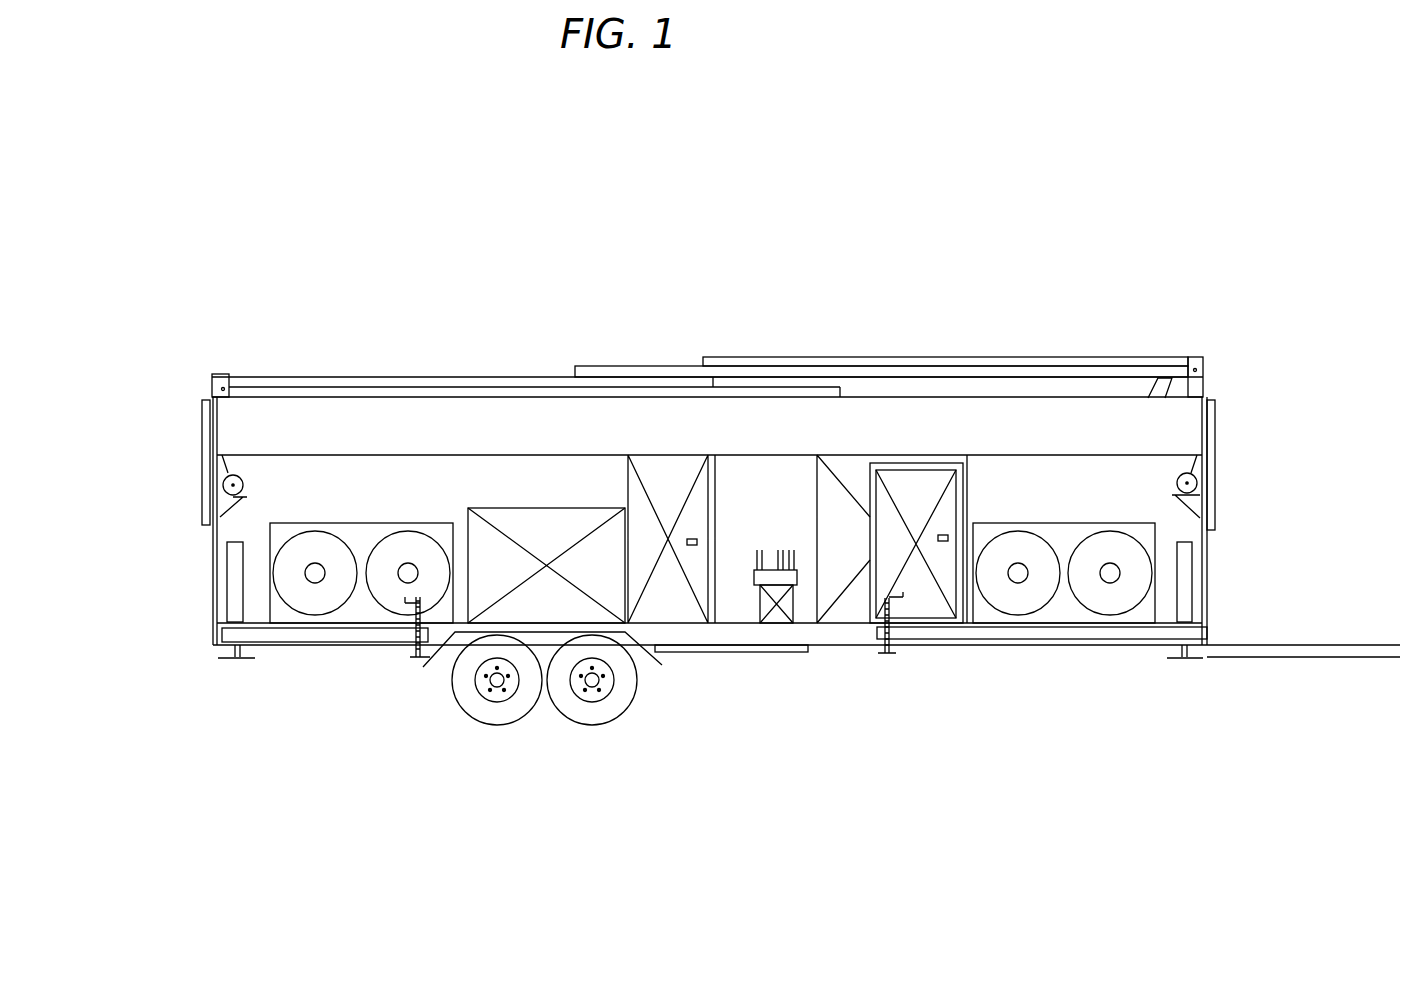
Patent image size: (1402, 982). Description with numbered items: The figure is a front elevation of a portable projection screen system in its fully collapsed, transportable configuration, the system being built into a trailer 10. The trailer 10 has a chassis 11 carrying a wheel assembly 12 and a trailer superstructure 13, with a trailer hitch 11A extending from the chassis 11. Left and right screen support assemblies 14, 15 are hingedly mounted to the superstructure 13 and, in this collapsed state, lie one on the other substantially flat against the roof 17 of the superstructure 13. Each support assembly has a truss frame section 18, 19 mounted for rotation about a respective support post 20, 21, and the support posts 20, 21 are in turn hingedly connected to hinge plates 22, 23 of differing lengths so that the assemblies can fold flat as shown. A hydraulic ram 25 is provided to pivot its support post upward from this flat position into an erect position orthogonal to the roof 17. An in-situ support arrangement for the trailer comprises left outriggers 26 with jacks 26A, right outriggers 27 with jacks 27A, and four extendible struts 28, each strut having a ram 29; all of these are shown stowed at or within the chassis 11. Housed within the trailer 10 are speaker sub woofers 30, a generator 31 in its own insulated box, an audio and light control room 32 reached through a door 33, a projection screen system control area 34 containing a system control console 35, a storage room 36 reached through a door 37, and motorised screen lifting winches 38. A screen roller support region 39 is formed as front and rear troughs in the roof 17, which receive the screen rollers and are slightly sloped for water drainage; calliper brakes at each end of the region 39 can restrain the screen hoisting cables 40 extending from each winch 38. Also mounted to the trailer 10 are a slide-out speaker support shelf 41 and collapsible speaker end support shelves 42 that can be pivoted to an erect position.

The trailer 10 is at (740, 680).
The chassis 11 is at (836, 635).
The trailer hitch 11A is at (1286, 650).
The wheel assembly 12 is at (542, 718).
The trailer superstructure 13 is at (213, 543).
The left screen support assembly 14 is at (383, 387).
The right screen support assembly 15 is at (948, 366).
The roof 17 is at (1015, 395).
The truss frame section 18 is at (460, 383).
The truss frame section 19 is at (803, 360).
The support post 20 is at (508, 392).
The support post 21 is at (1087, 372).
The hinge plate 22 is at (215, 378).
The hinge plate 23 is at (1198, 385).
The hydraulic ram 25 is at (1160, 390).
The left front and left rear outriggers 26 is at (300, 635).
The jack 26A is at (410, 662).
The right front and right rear outriggers 27 is at (1050, 632).
The jack 27A is at (897, 665).
The extendible struts 28 is at (235, 662).
The ram 29 is at (235, 568).
The speaker sub woofers 30 is at (358, 538).
The generator 31 is at (538, 528).
The audio and light control room 32 is at (672, 452).
The door 33 is at (672, 500).
The projection screen system control area 34 is at (782, 508).
The system control console 35 is at (777, 613).
The storage room 36 is at (861, 452).
The door 37 is at (918, 508).
The motorised screen lifting winch 38 is at (250, 488).
The screen roller support region 39 is at (305, 428).
The screen hoisting cable 40 is at (232, 467).
The slide-out speaker support shelf 41 is at (692, 655).
The collapsible speaker end support shelf 42 is at (205, 485).